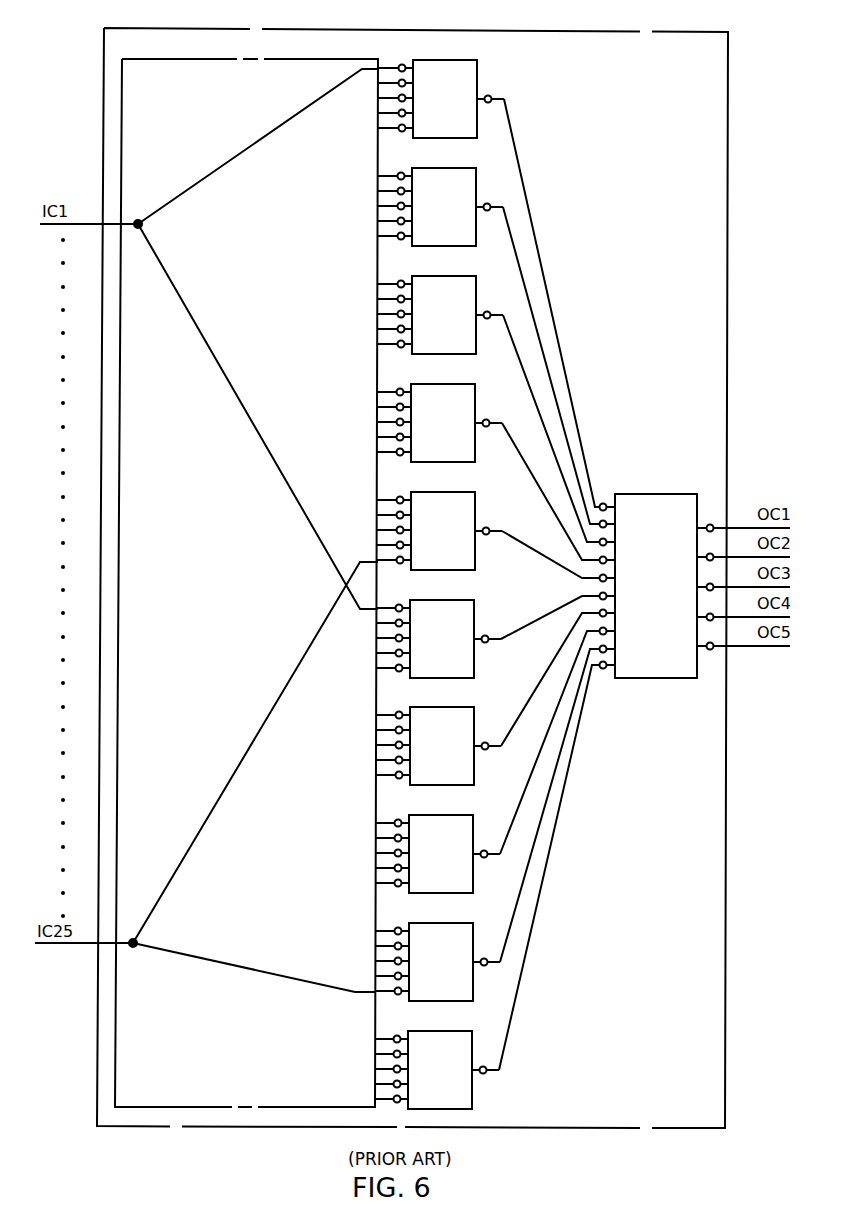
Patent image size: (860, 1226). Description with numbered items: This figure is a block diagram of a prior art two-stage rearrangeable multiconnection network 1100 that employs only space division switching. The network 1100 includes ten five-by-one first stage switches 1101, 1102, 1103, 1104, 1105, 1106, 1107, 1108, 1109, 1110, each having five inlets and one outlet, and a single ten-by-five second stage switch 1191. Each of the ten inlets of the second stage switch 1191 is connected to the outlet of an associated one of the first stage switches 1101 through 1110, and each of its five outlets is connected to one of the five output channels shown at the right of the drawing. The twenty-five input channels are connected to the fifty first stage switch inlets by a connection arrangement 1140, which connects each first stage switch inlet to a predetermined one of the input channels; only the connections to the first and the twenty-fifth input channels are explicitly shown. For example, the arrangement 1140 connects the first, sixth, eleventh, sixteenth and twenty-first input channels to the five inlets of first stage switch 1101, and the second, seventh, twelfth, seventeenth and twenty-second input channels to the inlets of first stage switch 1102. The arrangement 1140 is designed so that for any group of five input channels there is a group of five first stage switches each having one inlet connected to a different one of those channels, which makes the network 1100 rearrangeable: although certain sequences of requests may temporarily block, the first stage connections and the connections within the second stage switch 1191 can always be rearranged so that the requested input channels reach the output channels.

The rearrangeable multiconnection network 1100 is at (672, 32).
The connection arrangement 1140 is at (323, 59).
The first stage switch 1101 is at (432, 60).
The first stage switch 1102 is at (431, 168).
The first stage switch 1103 is at (431, 276).
The first stage switch 1104 is at (430, 384).
The first stage switch 1105 is at (430, 492).
The first stage switch 1106 is at (429, 600).
The first stage switch 1107 is at (429, 707).
The first stage switch 1108 is at (428, 815).
The first stage switch 1109 is at (428, 923).
The first stage switch 1110 is at (427, 1031).
The second stage switch 1191 is at (653, 494).